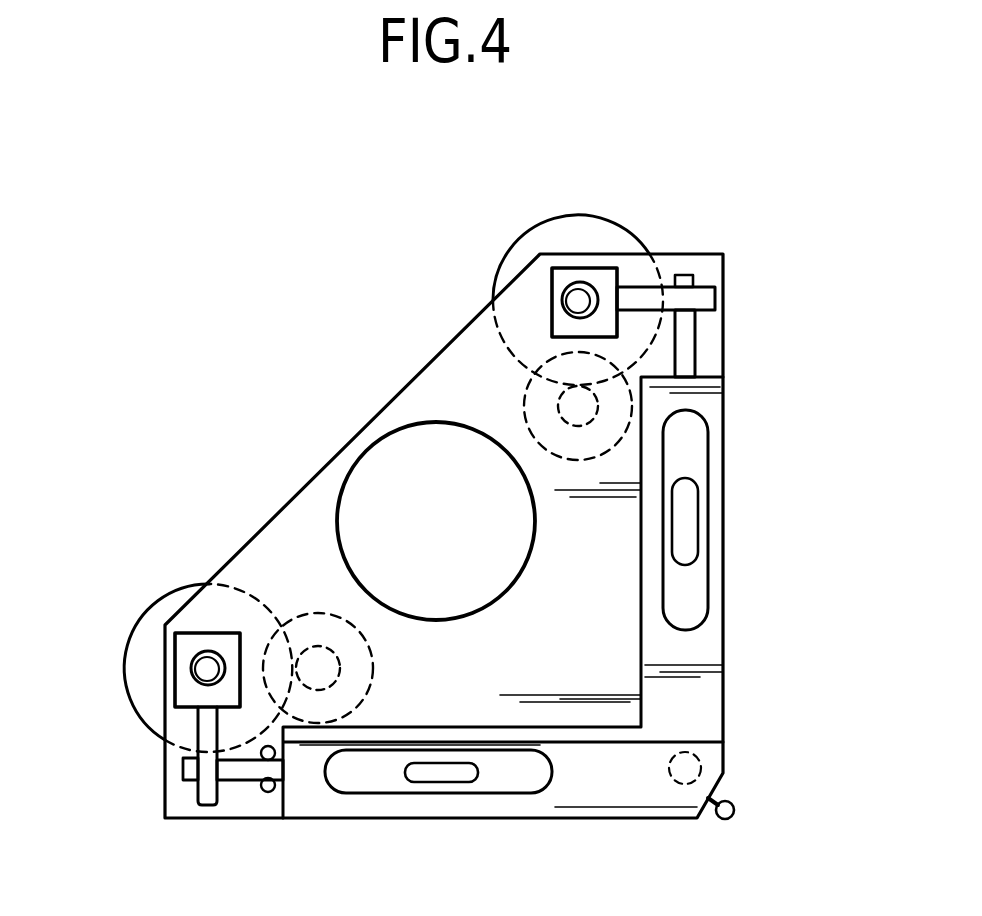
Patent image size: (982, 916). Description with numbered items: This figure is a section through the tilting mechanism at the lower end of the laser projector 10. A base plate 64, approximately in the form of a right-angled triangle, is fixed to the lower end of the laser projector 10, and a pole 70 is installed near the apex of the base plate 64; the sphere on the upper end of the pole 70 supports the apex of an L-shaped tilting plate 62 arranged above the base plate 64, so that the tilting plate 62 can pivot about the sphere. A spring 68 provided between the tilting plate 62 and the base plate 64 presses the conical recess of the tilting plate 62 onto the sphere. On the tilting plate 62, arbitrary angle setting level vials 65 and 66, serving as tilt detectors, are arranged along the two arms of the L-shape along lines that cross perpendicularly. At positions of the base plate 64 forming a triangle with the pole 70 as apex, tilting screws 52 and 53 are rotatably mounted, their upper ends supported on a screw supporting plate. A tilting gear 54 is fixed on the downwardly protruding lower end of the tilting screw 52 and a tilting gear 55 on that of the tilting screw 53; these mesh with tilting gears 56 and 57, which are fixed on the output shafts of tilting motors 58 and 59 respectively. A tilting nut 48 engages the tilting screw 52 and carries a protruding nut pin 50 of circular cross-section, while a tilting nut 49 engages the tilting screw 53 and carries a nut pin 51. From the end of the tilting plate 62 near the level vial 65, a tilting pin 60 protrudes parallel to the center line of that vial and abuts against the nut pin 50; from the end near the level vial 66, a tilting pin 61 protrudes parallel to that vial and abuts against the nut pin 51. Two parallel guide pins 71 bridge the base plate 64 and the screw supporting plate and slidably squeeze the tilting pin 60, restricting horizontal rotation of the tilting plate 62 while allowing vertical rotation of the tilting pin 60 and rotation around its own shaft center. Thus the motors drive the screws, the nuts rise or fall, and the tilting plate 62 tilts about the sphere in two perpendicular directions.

The laser projector 10 is at (515, 545).
The tilting nut 48 is at (185, 687).
The tilting nut 49 is at (618, 268).
The nut pin 50 is at (207, 793).
The nut pin 51 is at (715, 298).
The tilting screw 52 is at (207, 660).
The tilting screw 53 is at (575, 292).
The tilting gear 54 is at (150, 638).
The tilting gear 55 is at (603, 230).
The tilting gear 56 is at (303, 655).
The tilting gear 57 is at (570, 403).
The tilting motor 58 is at (330, 627).
The tilting motor 59 is at (532, 412).
The tilting pin 60 is at (250, 775).
The tilting pin 61 is at (697, 350).
The tilting plate 62 is at (710, 695).
The base plate 64 is at (427, 397).
The arbitrary angle setting level vial 65 is at (540, 780).
The arbitrary angle setting level vial 66 is at (700, 585).
The spring 68 is at (735, 817).
The pole 70 is at (667, 767).
The guide pins 71 is at (275, 787).